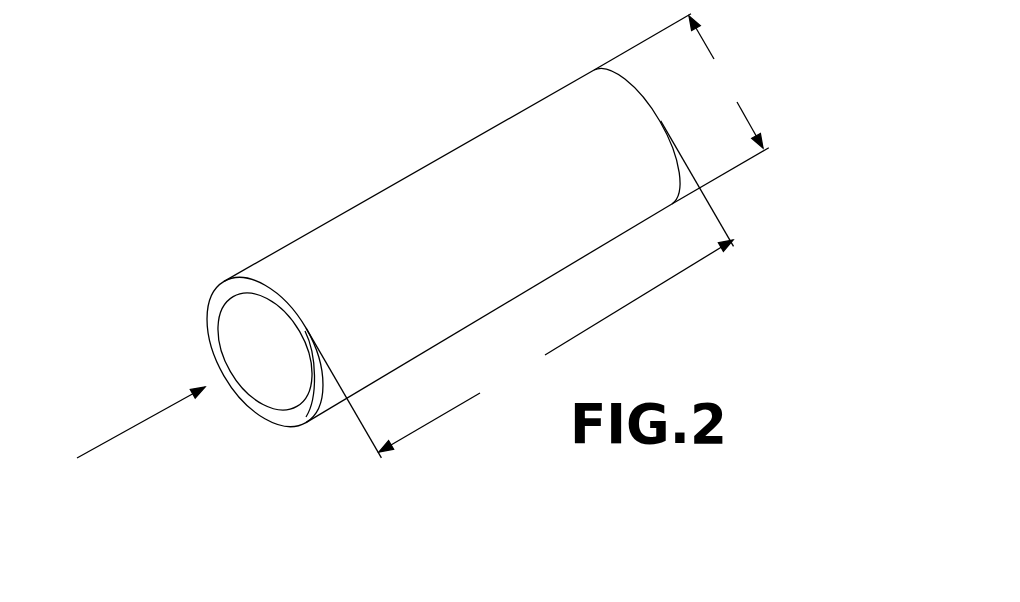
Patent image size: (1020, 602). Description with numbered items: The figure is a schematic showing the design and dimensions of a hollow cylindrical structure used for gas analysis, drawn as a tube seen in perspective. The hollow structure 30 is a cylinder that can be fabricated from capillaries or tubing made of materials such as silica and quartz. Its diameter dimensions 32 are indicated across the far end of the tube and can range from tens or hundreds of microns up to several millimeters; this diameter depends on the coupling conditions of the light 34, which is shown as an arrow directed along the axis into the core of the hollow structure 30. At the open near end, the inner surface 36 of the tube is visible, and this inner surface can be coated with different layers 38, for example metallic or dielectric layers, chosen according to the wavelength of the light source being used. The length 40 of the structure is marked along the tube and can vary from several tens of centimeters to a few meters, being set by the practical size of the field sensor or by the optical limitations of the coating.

The hollow structure 30 is at (482, 215).
The diameter dimensions 32 is at (681, 109).
The light 34 is at (150, 417).
The inner surface 36 is at (212, 340).
The layers 38 is at (281, 363).
The length 40 is at (519, 289).